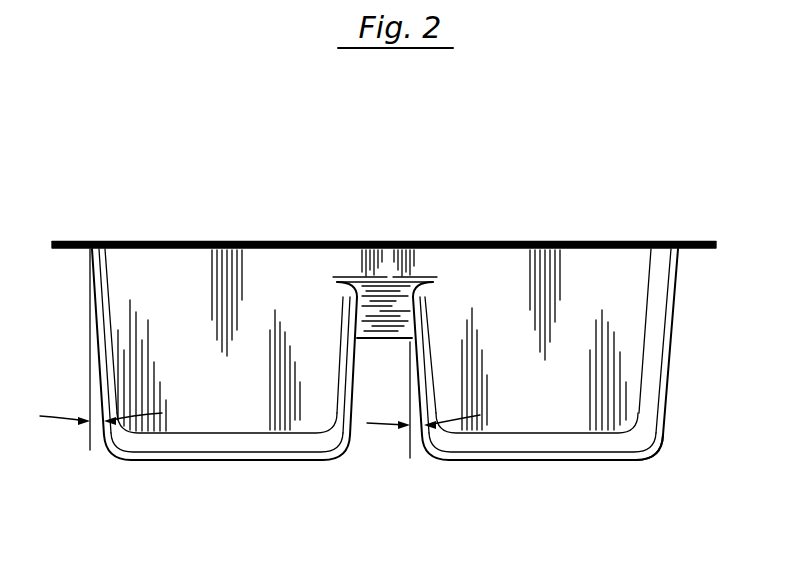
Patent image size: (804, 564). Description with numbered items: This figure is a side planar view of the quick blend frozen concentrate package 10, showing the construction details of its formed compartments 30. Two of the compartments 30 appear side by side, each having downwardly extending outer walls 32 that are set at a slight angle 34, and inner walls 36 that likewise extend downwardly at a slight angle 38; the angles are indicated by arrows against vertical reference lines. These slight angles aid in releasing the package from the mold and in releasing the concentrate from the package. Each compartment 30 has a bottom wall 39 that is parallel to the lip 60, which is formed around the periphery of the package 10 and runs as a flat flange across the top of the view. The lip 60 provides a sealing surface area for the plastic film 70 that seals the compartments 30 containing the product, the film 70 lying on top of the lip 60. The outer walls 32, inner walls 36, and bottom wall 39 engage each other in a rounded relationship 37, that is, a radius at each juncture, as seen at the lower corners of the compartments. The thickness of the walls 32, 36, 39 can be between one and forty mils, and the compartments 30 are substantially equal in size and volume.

The package 10 is at (647, 194).
The compartment 30 is at (217, 233).
The outer wall 32 is at (103, 338).
The slight angle 34 is at (102, 456).
The inner wall 36 is at (352, 362).
The rounded relationship 37 is at (651, 463).
The slight angle 38 is at (418, 457).
The bottom wall 39 is at (206, 446).
The lip 60 is at (73, 238).
The plastic film 70 is at (157, 241).